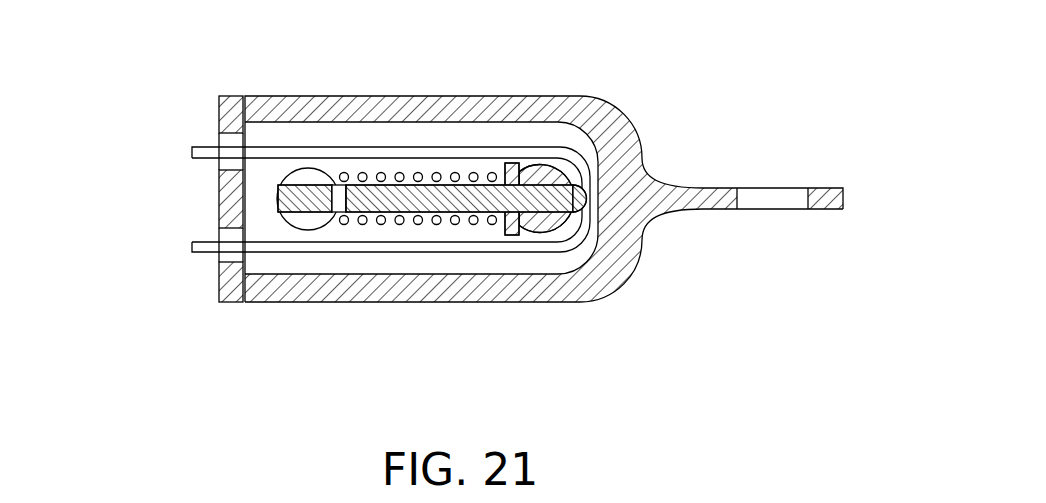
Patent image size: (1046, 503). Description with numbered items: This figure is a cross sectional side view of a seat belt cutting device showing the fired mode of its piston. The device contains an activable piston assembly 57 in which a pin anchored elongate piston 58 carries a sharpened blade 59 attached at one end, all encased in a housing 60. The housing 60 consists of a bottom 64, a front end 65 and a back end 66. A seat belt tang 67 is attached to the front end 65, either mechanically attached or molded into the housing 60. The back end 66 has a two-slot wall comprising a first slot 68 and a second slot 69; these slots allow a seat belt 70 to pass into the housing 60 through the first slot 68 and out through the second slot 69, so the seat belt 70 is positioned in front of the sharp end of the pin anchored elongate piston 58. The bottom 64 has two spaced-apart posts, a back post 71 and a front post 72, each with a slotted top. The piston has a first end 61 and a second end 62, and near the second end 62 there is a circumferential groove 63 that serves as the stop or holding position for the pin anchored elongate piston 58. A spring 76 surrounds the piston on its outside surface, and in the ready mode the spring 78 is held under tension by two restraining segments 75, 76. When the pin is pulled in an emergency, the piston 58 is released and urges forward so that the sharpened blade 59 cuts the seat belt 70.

The activable piston assembly 57 is at (440, 158).
The pin anchored elongate piston 58 is at (437, 200).
The sharpened blade 59 is at (578, 182).
The housing 60 is at (533, 97).
The first end 61 is at (658, 270).
The second end 62 is at (160, 229).
The circumferential groove 63 is at (337, 208).
The bottom 64 is at (537, 303).
The front end 65 is at (672, 168).
The back end 66 is at (219, 121).
The seat belt tang 67 is at (782, 187).
The first slot 68 is at (218, 161).
The second slot 69 is at (218, 258).
The seat belt 70 is at (349, 96).
The back post 71 is at (298, 232).
The front post 72 is at (513, 235).
The restraining segment 75 is at (300, 165).
The spring 76 is at (552, 170).
The spring 78 is at (380, 222).